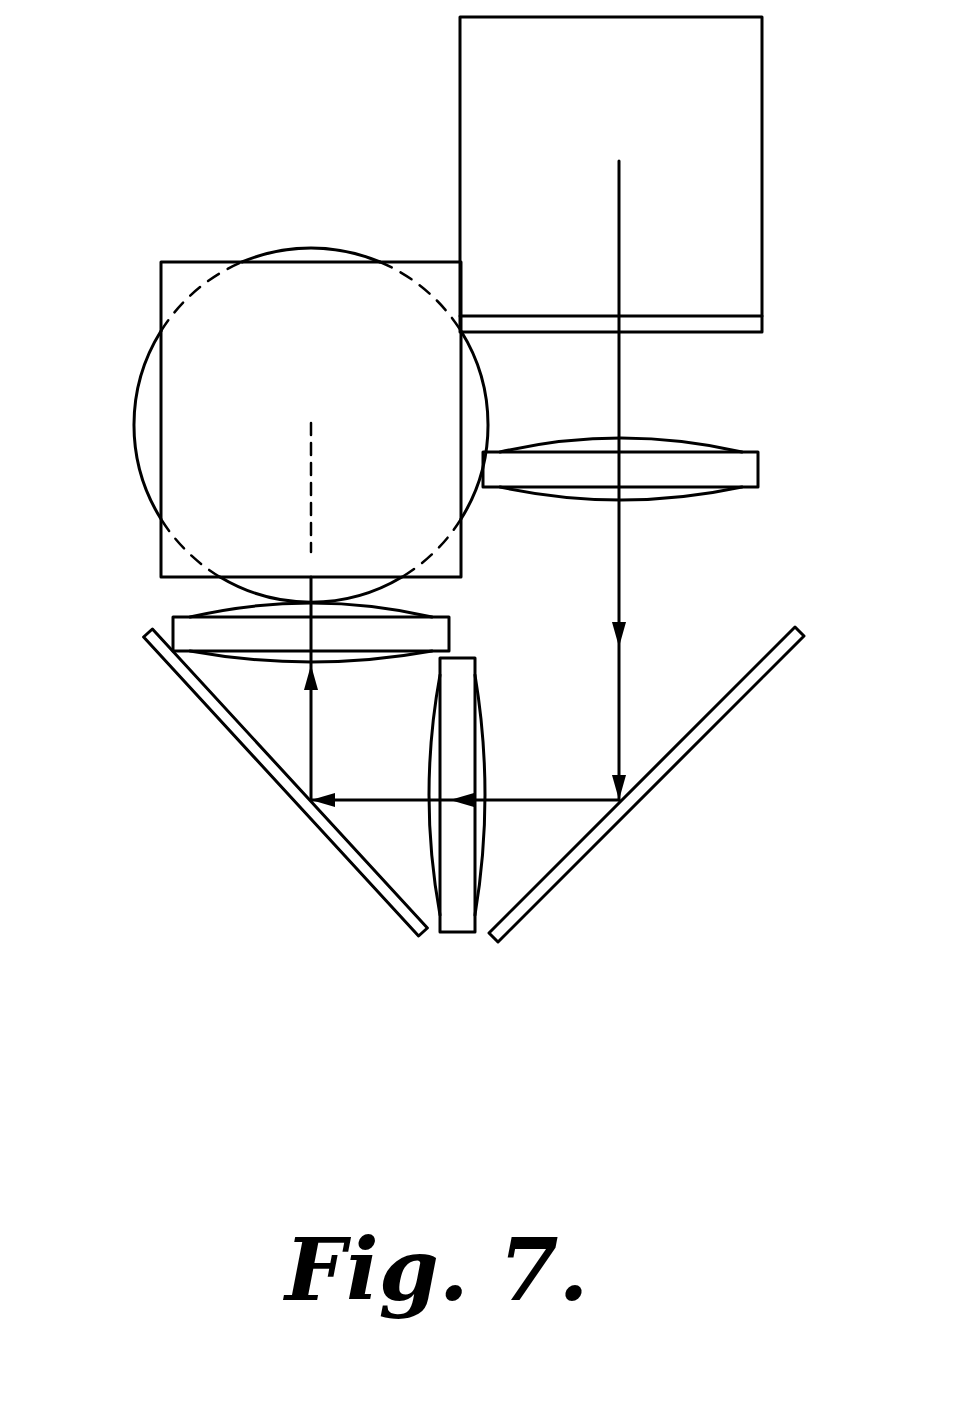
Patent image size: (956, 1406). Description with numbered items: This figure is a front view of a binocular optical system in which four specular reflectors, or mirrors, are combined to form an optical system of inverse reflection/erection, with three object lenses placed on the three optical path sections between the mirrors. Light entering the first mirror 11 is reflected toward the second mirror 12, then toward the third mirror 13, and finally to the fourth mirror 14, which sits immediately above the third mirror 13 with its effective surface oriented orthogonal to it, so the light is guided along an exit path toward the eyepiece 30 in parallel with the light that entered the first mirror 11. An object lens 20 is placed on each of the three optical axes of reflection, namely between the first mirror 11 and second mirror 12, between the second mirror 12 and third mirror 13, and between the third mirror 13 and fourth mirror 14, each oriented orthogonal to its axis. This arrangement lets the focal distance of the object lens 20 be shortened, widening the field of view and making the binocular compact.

The first specular reflector 11 is at (740, 178).
The second specular reflector 12 is at (668, 773).
The third specular reflector 13 is at (273, 777).
The fourth specular reflector 14 is at (183, 400).
The object lens 20 is at (747, 480).
The eyepiece 30 is at (293, 250).